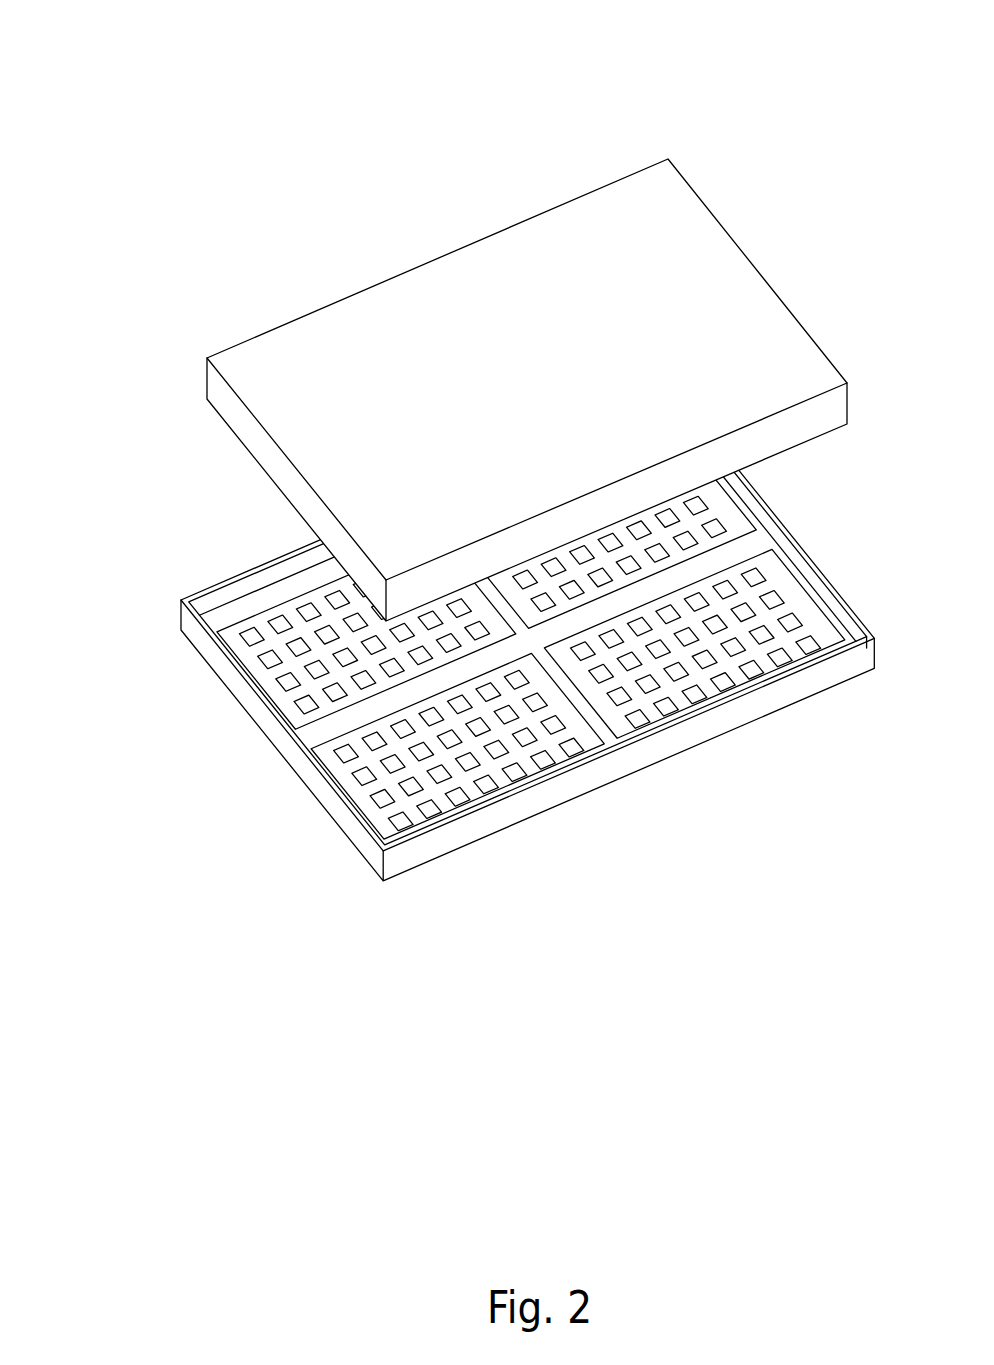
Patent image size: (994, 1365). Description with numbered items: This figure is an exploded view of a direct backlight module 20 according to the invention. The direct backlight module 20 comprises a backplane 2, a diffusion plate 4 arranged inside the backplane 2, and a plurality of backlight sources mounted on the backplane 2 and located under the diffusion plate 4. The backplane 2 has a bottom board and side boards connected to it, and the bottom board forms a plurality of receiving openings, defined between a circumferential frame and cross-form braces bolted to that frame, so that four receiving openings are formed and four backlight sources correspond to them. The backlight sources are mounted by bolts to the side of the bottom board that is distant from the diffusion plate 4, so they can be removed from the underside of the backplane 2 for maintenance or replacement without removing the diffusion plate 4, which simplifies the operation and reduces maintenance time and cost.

The direct backlight module 20 is at (497, 45).
The backplane 2 is at (217, 660).
The diffusion plate 4 is at (345, 387).